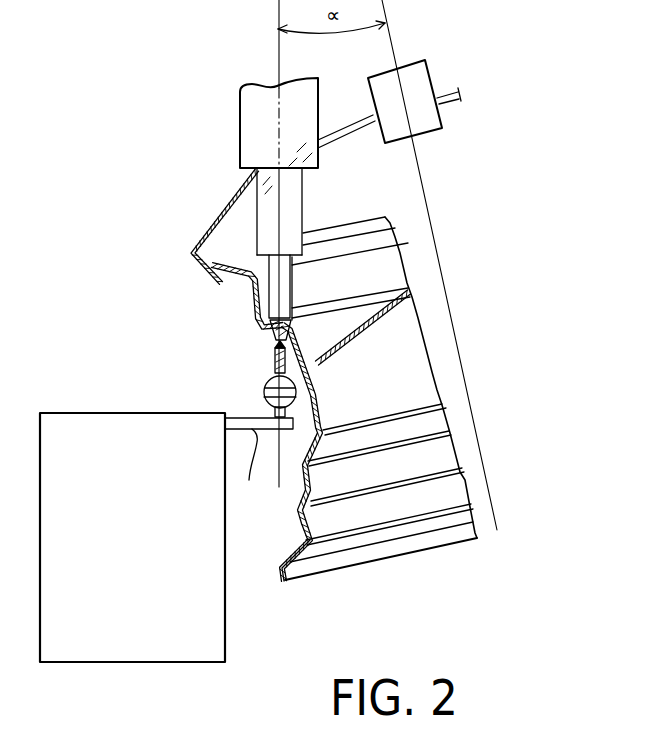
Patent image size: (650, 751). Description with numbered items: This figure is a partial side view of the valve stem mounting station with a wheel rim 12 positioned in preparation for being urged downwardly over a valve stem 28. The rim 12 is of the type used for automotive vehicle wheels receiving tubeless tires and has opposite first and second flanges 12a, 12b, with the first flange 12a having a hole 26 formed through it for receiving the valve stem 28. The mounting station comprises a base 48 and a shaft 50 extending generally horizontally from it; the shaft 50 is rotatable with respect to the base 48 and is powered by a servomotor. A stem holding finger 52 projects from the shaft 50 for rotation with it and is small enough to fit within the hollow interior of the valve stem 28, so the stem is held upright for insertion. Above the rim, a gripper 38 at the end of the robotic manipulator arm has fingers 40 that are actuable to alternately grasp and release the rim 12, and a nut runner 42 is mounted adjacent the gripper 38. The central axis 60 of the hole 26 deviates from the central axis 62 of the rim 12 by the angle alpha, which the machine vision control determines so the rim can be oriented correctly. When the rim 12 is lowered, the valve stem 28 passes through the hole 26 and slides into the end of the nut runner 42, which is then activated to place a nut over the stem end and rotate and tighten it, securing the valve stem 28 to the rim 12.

The rim 12 is at (383, 263).
The first flange 12a is at (252, 302).
The second flange 12b is at (297, 533).
The hole 26 is at (278, 338).
The valve stem 28 is at (275, 362).
The gripper 38 is at (441, 80).
The fingers 40 is at (237, 202).
The nut runner 42 is at (253, 117).
The base 48 is at (149, 522).
The shaft 50 is at (251, 476).
The stem holding finger 52 is at (270, 413).
The central axis of the hole 60 is at (278, 57).
The central axis of the rim 62 is at (400, 45).